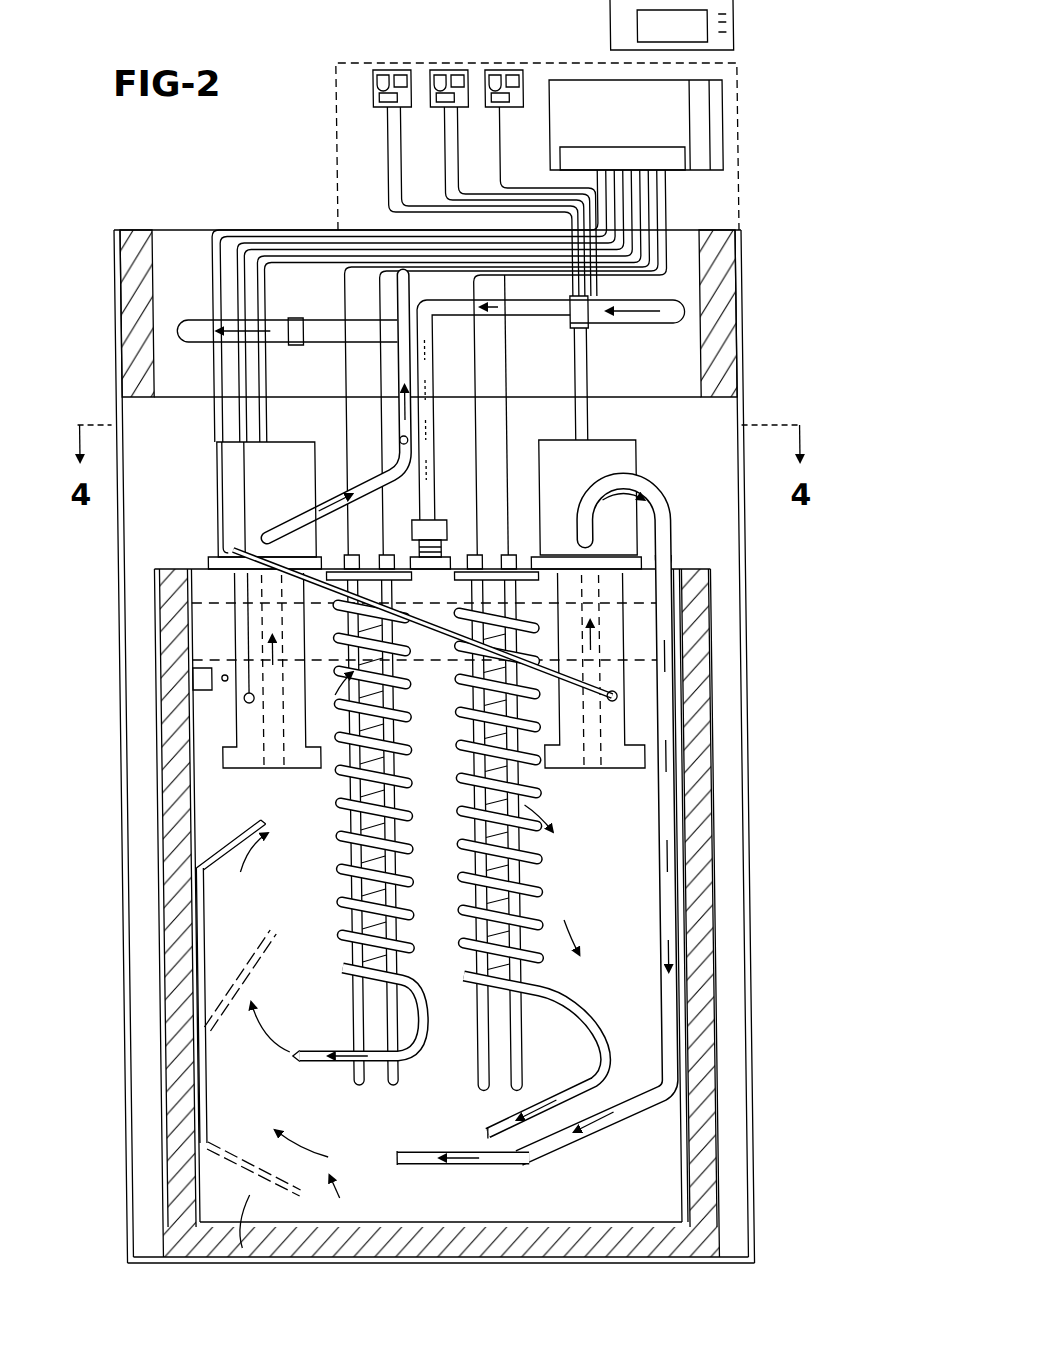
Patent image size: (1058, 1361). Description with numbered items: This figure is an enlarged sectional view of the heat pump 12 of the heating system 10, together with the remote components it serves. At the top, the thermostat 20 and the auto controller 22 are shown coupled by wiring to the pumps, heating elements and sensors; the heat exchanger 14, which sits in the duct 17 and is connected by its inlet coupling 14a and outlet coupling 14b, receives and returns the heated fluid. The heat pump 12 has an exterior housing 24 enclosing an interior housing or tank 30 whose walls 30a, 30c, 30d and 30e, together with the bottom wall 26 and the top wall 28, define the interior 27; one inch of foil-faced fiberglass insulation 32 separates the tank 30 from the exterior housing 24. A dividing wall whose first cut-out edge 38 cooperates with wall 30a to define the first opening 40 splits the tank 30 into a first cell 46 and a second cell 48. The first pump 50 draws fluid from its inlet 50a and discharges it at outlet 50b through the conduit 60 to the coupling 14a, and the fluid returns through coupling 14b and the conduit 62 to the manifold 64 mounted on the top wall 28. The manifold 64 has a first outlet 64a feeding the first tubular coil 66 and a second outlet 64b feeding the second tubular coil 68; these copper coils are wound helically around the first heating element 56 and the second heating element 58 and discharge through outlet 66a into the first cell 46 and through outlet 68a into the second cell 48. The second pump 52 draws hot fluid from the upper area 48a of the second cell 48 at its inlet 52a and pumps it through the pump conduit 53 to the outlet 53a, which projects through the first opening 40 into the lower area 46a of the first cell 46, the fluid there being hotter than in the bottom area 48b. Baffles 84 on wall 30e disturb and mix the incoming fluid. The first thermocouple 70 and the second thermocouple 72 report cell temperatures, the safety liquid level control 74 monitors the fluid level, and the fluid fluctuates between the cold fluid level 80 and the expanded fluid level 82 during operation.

The heating system 10 is at (158, 216).
The heat pump 12 is at (150, 948).
The heat exchanger 14 is at (118, 285).
The inlet conduit or coupling 14a is at (200, 318).
The outlet conduit or coupling 14b is at (705, 302).
The conduit or duct 17 is at (748, 352).
The thermostat 20 is at (614, 28).
The auto controller 22 is at (340, 146).
The exterior housing 24 is at (746, 792).
The bottom surface or wall 26 is at (430, 1262).
The interior 27 is at (660, 1162).
The top surface or wall 28 is at (190, 570).
The interior housing or tank 30 is at (172, 963).
The wall 30a is at (237, 1222).
The wall 30c is at (670, 860).
The wall 30d is at (676, 1105).
The wall 30e is at (215, 815).
The foil-faced fiberglass insulation 32 is at (130, 336).
The first cut-out portion or edge 38 is at (468, 1068).
The first opening 40 is at (445, 1188).
The first cell or area 46 is at (230, 1053).
The lower area 46a is at (325, 1195).
The second cell or area 48 is at (601, 882).
The upper area 48a is at (652, 734).
The lower or bottom area 48b is at (625, 1215).
The first pump 50 is at (255, 467).
The fluid inlet 50a is at (250, 775).
The outlet 50b is at (245, 552).
The second pump 52 is at (610, 438).
The pump inlet 52a is at (555, 790).
The pump conduit 53 is at (650, 878).
The outlet 53a is at (398, 1165).
The first heating element 56 is at (352, 1000).
The second heating element 58 is at (510, 1060).
The conduit 60 is at (350, 490).
The conduit 62 is at (550, 328).
The manifold 64 is at (448, 562).
The first outlet 64a is at (350, 558).
The second outlet 64b is at (615, 498).
The first tubular coil 66 is at (347, 841).
The outlet 66a is at (300, 1062).
The second tubular coil 68 is at (493, 847).
The outlet 68a is at (472, 1130).
The first thermocouple 70 is at (241, 699).
The second thermocouple 72 is at (615, 697).
The safety liquid level control 74 is at (190, 678).
The cold fluid level 80 is at (655, 653).
The fluid level 82 is at (640, 607).
The baffles 84 is at (240, 960).